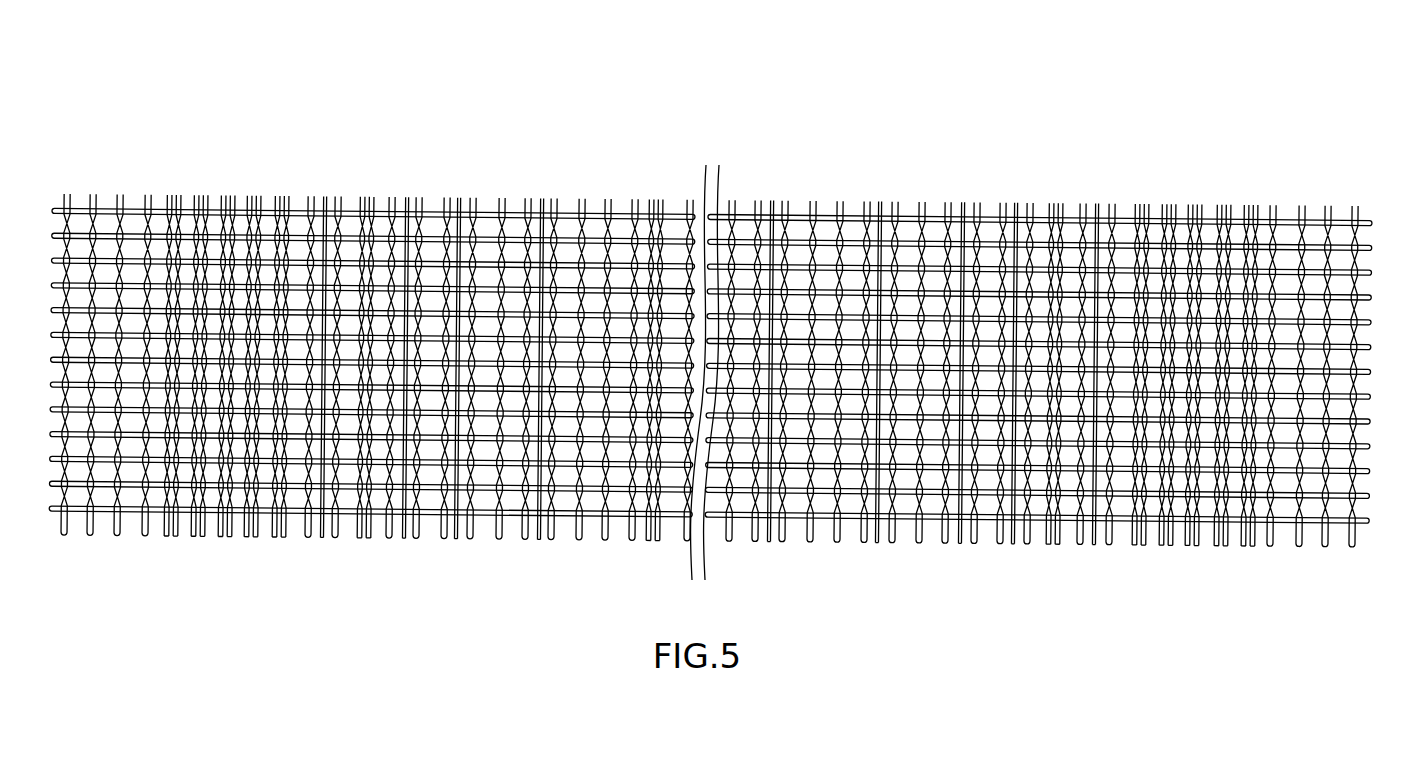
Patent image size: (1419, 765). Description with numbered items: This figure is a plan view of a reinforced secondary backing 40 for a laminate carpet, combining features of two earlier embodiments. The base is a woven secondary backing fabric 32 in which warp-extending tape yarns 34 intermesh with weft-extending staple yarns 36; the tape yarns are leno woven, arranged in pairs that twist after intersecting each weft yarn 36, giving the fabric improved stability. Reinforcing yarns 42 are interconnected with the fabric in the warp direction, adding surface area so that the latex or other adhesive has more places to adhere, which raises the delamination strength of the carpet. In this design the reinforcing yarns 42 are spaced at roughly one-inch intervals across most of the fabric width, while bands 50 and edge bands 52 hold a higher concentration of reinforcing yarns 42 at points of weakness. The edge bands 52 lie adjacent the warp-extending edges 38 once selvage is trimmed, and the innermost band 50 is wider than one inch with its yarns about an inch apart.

The woven secondary backing fabric 32 is at (118, 530).
The warp-extending tape yarns 34 is at (733, 200).
The weft-extending staple yarns 36 is at (1372, 273).
The opposed edges 38 is at (155, 527).
The reinforced secondary backing 40 is at (1320, 155).
The reinforcing yarns 42 is at (218, 530).
The band 50 is at (690, 196).
The edge band 52 is at (270, 194).